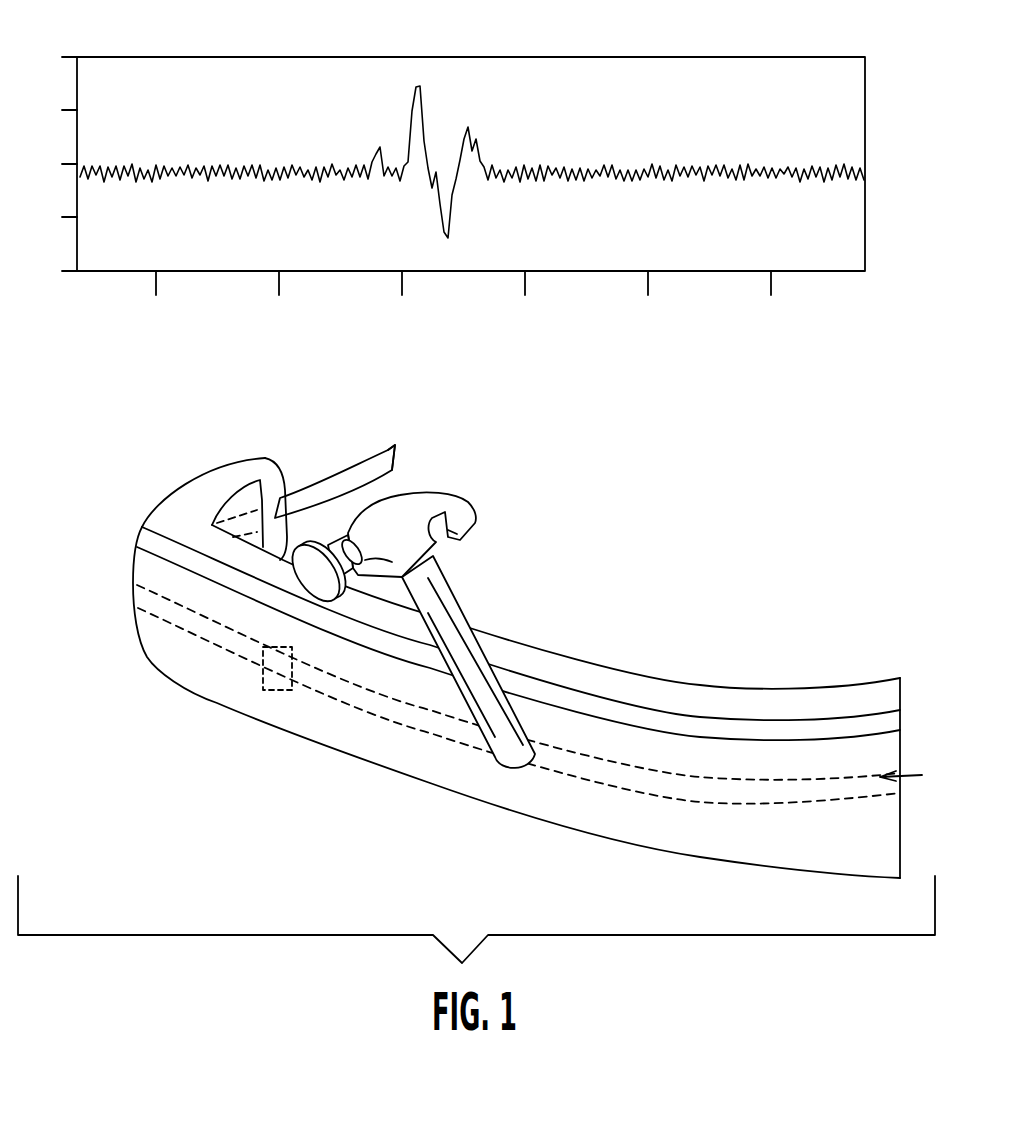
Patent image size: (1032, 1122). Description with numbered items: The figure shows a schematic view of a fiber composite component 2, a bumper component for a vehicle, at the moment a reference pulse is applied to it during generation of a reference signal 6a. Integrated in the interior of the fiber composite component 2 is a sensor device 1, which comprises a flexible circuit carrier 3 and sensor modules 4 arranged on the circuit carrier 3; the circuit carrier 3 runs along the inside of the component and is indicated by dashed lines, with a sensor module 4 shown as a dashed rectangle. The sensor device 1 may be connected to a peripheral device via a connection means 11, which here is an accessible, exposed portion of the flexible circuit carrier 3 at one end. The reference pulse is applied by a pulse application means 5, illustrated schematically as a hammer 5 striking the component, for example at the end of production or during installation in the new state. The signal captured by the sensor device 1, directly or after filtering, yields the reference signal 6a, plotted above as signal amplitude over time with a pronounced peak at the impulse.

The sensor device 1 is at (323, 493).
The fiber composite component 2 is at (130, 583).
The flexible circuit carrier 3 is at (388, 703).
The sensor modules 4 is at (277, 670).
The pulse application means 5 is at (445, 578).
The reference signal 6a is at (916, 184).
The connection means 11 is at (380, 455).